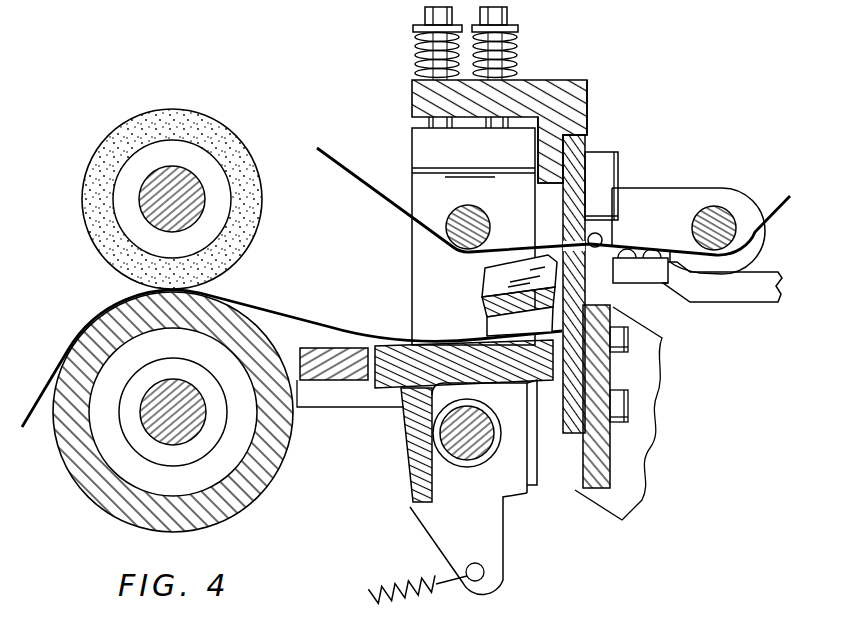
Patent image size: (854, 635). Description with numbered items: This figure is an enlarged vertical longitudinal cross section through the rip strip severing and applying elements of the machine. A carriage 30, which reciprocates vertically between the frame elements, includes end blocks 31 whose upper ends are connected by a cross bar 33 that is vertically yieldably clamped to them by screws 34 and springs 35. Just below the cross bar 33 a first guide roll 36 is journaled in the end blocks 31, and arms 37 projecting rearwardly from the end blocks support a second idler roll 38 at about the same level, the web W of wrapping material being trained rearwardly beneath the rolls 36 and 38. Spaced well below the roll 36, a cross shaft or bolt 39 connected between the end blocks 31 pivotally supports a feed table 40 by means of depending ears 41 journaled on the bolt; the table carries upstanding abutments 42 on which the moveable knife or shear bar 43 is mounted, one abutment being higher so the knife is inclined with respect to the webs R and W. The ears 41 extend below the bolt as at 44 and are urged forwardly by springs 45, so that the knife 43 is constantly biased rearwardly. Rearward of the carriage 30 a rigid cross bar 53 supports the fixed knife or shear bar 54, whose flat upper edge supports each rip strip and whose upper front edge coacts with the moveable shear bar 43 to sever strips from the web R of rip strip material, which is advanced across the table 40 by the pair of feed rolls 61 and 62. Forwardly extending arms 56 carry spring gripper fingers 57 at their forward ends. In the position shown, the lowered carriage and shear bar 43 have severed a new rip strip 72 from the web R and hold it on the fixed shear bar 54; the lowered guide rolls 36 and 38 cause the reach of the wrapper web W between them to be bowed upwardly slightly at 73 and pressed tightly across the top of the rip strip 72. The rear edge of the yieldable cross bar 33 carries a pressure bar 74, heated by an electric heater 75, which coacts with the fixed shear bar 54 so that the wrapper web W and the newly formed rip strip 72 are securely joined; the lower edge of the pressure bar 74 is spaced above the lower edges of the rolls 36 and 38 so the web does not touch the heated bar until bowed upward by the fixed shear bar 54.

The carriage 30 is at (590, 92).
The end blocks 31 is at (418, 273).
The cross bar 33 is at (420, 100).
The screws 34 is at (426, 14).
The springs 35 is at (422, 42).
The first guide roll 36 is at (452, 208).
The arms 37 is at (660, 190).
The second idler roll 38 is at (720, 218).
The cross shaft or bolt 39 is at (445, 442).
The feed table 40 is at (417, 370).
The depending ears 41 is at (440, 475).
The upstanding abutments 42 is at (493, 326).
The moveable knife or shear bar 43 is at (482, 302).
The downward extension of ears 44 is at (435, 512).
The springs 45 is at (380, 590).
The rigid cross bar 53 is at (600, 445).
The fixed knife or shear bar 54 is at (575, 360).
The arms 56 is at (737, 290).
The spring gripper fingers 57 is at (605, 243).
The lower feed roll 61 is at (100, 492).
The feed roll 62 is at (100, 235).
The rip strip 72 is at (583, 250).
The upwardly bowed reach of wrapper web 73 is at (560, 247).
The pressure bar 74 is at (573, 143).
The electric heater 75 is at (600, 172).
The web of wrapping material W is at (362, 186).
The web of rip strip material R is at (270, 313).